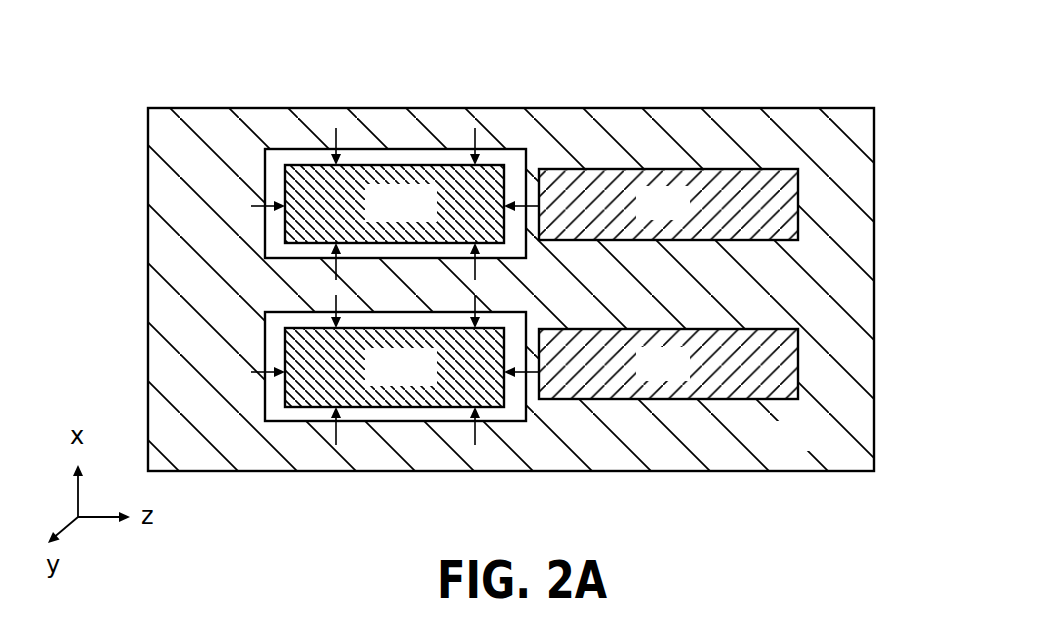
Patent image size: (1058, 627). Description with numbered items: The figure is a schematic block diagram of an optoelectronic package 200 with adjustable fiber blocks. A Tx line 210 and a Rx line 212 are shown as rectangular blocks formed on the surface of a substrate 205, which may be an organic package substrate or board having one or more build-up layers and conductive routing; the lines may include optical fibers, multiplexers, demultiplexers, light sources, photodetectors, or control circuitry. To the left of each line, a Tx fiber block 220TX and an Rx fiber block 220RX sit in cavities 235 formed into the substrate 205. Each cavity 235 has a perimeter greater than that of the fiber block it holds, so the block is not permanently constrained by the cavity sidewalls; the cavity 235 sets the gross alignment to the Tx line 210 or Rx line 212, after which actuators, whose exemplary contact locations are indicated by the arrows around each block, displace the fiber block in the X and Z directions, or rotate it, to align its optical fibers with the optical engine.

The optoelectronic package 200 is at (778, 68).
The substrate 205 is at (818, 446).
The Tx line 210 is at (680, 215).
The Rx line 212 is at (680, 376).
The Tx fiber block 220TX is at (405, 210).
The Rx fiber block 220RX is at (405, 375).
The cavity 235 is at (515, 167).